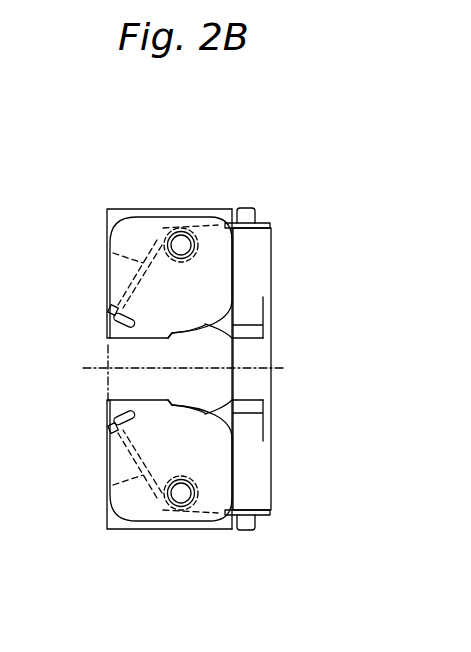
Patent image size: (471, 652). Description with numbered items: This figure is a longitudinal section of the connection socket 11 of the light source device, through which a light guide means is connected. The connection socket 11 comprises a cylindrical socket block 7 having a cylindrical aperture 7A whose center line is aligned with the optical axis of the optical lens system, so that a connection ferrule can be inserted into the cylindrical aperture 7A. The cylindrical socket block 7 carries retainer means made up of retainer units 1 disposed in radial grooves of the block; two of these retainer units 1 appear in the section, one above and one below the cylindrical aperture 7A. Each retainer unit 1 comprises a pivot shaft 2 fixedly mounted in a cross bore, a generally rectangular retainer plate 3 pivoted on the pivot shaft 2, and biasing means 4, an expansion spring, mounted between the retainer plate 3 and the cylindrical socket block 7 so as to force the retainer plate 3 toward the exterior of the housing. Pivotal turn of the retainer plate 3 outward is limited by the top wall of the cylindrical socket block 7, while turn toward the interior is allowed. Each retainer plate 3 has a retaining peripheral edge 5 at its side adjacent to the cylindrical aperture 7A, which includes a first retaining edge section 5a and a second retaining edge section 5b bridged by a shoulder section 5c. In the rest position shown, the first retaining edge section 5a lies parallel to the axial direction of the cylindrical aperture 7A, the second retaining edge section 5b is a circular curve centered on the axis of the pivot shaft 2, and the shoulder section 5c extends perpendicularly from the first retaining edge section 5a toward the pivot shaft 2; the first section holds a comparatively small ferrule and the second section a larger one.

The connection socket 11 is at (288, 190).
The retainer unit 1 is at (95, 282).
The pivot shaft 2 is at (185, 228).
The retainer plate 3 is at (135, 218).
The biasing means 4 is at (107, 247).
The retaining peripheral edge 5 is at (112, 357).
The first retaining edge section 5a is at (152, 339).
The second retaining edge section 5b is at (233, 337).
The shoulder section 5c is at (172, 334).
The cylindrical socket block 7 is at (272, 258).
The cylindrical aperture 7A is at (263, 328).